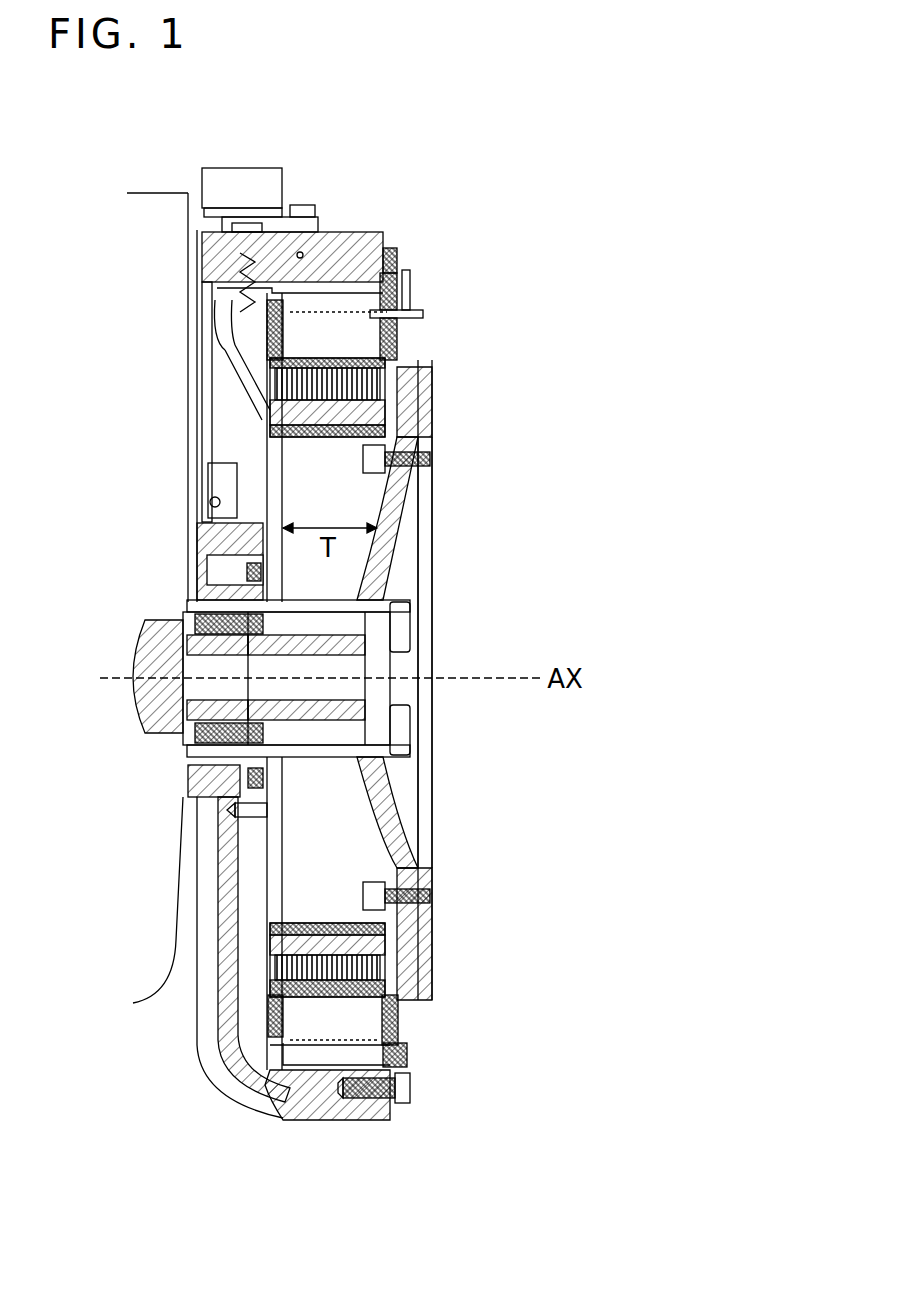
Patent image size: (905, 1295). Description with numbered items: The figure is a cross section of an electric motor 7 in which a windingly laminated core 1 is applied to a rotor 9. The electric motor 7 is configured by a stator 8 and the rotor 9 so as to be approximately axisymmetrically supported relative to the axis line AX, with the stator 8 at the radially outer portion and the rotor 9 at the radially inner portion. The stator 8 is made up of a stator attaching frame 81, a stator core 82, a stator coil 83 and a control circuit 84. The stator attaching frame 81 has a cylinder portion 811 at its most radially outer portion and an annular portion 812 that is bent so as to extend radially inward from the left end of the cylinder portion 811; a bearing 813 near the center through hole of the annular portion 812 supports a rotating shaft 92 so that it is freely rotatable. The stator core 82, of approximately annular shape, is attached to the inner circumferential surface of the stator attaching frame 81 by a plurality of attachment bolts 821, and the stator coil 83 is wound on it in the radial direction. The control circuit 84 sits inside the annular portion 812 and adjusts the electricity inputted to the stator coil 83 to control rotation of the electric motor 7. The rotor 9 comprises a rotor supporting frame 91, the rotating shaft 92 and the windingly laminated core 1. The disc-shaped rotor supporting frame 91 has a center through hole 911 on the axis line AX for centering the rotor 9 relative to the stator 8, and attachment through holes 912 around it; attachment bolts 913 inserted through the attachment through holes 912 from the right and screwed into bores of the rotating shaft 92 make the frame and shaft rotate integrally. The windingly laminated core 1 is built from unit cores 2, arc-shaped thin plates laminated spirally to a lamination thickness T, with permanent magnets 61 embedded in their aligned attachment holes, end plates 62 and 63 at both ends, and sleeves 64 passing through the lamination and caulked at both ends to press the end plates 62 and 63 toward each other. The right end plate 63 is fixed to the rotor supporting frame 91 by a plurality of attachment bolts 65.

The windingly laminated core 1 is at (320, 440).
The unit core 2 is at (250, 387).
The electric motor 7 is at (333, 166).
The stator 8 is at (428, 1065).
The rotor 9 is at (445, 360).
The permanent magnet 61 is at (395, 380).
The end plate 62 is at (272, 375).
The end plate 63 is at (403, 360).
The sleeve 64 is at (403, 423).
The attachment bolt 65 is at (432, 460).
The stator attaching frame 81 is at (395, 1120).
The stator core 82 is at (400, 1030).
The stator coil 83 is at (398, 1010).
The control circuit 84 is at (188, 425).
The rotor supporting frame 91 is at (432, 490).
The rotating shaft 92 is at (185, 622).
The cylinder portion 811 is at (300, 1122).
The annular portion 812 is at (230, 920).
The bearing 813 is at (190, 780).
The attachment bolt 821 is at (410, 1082).
The center through hole 911 is at (410, 692).
The attachment through hole 912 is at (395, 650).
The attachment bolt 913 is at (412, 615).